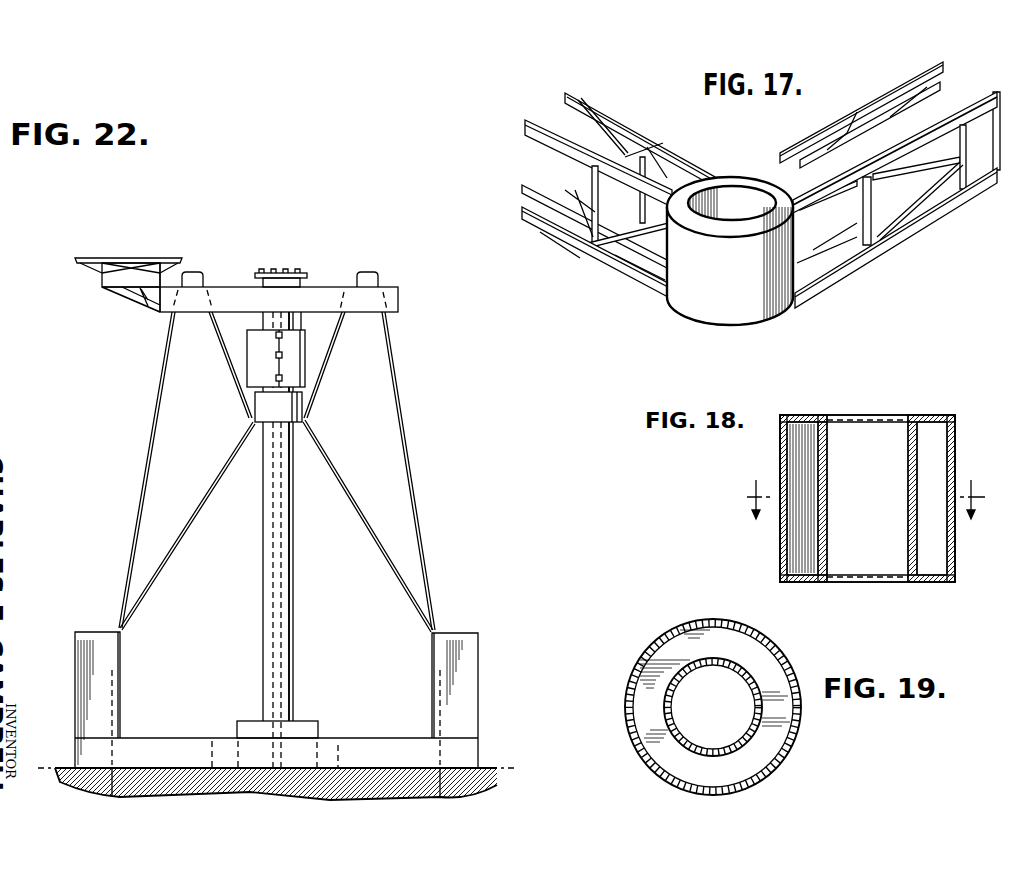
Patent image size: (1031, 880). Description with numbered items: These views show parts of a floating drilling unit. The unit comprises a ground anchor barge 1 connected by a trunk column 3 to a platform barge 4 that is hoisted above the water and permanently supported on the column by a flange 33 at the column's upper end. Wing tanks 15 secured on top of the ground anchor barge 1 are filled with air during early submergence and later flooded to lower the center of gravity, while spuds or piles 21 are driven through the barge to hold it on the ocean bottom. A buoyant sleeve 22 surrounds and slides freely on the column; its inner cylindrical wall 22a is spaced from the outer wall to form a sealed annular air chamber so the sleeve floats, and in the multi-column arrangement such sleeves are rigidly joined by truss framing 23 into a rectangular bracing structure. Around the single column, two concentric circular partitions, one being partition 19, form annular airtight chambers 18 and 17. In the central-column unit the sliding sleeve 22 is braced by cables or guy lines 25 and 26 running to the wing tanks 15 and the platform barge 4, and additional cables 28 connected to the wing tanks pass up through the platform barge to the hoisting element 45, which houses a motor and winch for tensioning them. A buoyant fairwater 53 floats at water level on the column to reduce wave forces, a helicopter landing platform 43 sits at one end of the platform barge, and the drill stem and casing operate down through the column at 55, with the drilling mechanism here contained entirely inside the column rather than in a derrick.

In FIG. 22, the ground anchor barge 1 is at (358, 738).
In FIG. 22, the trunk column 3 is at (290, 570).
In FIG. 22, the platform barge 4 is at (399, 300).
In FIG. 22, the wing tanks 15 is at (440, 653).
In FIG. 22, the annular airtight chamber 17 is at (336, 755).
In FIG. 22, the annular airtight chamber 18 is at (318, 721).
In FIG. 18, the concentric circular partition 19 is at (865, 497).
In FIG. 22, the spuds or piles 21 is at (120, 677).
In FIG. 17, the buoyant sleeve 22 is at (690, 313).
In FIG. 18, the buoyant sleeve 22 is at (780, 440).
In FIG. 19, the buoyant sleeve 22 is at (787, 668).
In FIG. 22, the buoyant sleeve 22 is at (258, 412).
In FIG. 18, the inner cylindrical wall 22a is at (829, 456).
In FIG. 19, the inner cylindrical wall 22a is at (720, 667).
In FIG. 17, the truss framing 23 is at (600, 265).
In FIG. 22, the cables or guy lines 25 is at (331, 362).
In FIG. 22, the cables or guy lines 26 is at (197, 512).
In FIG. 22, the additional cables 28 is at (158, 398).
In FIG. 22, the flange 33 is at (303, 275).
In FIG. 22, the helicopter landing platform 43 is at (118, 261).
In FIG. 22, the cable hoisting element 45 is at (192, 270).
In FIG. 22, the fairwater 53 is at (255, 338).
In FIG. 22, the drill stem and casing passage 55 is at (266, 629).